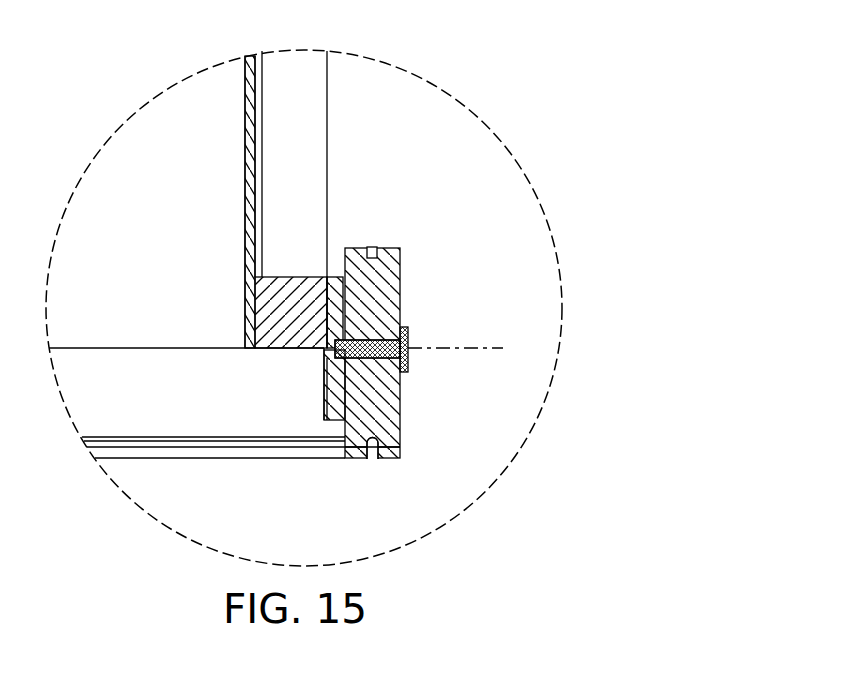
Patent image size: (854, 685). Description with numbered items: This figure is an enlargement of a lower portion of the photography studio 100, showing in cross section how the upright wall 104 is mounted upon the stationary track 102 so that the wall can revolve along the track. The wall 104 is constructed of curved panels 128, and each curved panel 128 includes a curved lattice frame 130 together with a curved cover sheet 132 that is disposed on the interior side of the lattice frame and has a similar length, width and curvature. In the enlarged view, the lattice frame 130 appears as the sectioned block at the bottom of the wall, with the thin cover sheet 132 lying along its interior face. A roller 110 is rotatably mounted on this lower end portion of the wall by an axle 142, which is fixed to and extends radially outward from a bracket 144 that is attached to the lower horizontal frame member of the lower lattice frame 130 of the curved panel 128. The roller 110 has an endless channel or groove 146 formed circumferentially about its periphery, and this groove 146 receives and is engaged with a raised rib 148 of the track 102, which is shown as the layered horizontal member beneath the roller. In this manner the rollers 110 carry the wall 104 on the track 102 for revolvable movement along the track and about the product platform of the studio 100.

The photography studio 100 is at (386, 96).
The stationary track 102 is at (155, 460).
The upright wall 104 is at (333, 170).
The roller 110 is at (400, 272).
The curved panel 128 is at (236, 237).
The curved lattice frame 130 is at (268, 352).
The curved cover sheet 132 is at (243, 152).
The axle 142 is at (408, 337).
The bracket 144 is at (330, 398).
The groove 146 is at (383, 423).
The raised rib 148 is at (373, 443).